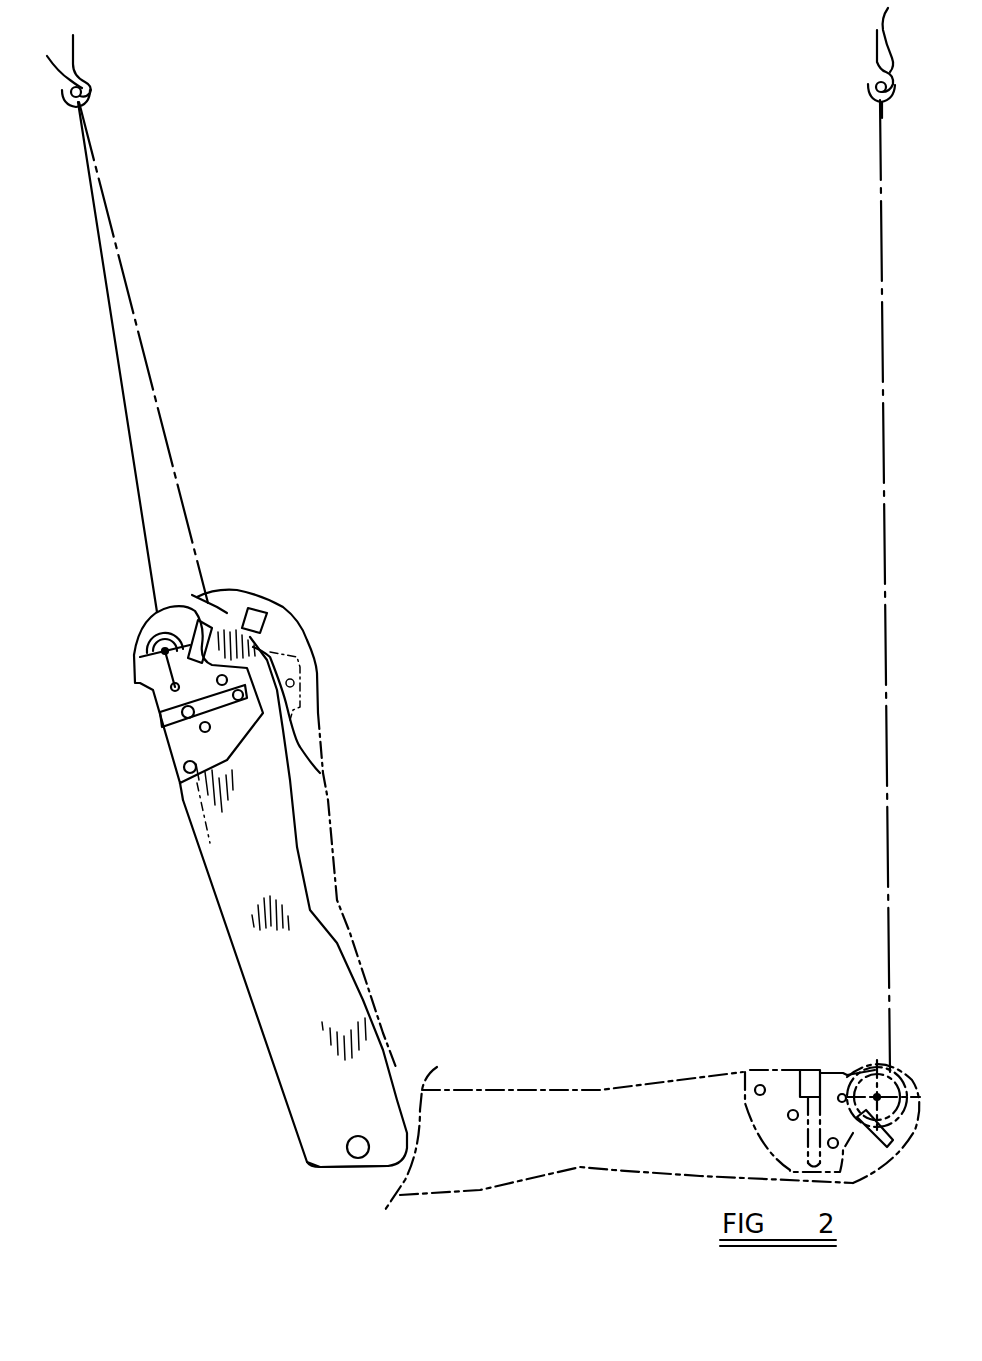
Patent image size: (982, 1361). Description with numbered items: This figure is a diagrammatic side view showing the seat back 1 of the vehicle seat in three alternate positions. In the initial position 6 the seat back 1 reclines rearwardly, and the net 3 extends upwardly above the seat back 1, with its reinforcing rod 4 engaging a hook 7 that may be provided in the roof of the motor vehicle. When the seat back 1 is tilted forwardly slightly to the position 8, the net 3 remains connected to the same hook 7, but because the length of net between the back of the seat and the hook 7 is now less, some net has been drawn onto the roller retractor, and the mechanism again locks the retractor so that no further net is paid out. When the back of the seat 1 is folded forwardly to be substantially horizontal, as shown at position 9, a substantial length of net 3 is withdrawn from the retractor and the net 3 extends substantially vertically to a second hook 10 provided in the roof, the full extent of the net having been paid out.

The seat back 1 is at (252, 990).
The net 3 is at (133, 491).
The reinforcing rod 4 is at (64, 68).
The initial position 6 is at (237, 935).
The hook 7 is at (86, 78).
The position 8 is at (333, 853).
The position 9 is at (597, 1087).
The second hook 10 is at (894, 59).